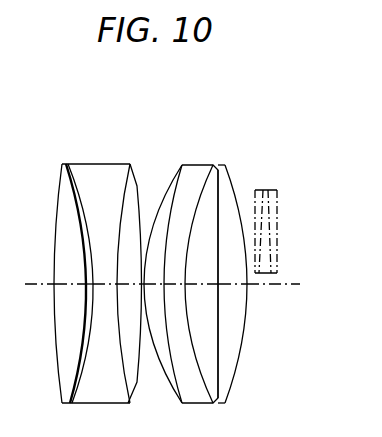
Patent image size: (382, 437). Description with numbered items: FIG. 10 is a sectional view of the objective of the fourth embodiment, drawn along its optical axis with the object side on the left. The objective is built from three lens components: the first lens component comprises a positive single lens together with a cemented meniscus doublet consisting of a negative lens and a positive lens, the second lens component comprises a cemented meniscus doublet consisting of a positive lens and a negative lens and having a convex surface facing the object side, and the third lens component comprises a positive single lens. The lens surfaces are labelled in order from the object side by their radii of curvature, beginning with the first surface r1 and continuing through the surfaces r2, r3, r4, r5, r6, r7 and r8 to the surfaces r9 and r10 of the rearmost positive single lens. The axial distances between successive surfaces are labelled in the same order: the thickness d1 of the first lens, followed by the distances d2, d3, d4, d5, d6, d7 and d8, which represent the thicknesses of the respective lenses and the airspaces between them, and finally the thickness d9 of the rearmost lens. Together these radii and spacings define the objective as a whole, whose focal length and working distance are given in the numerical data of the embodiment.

The radius of curvature of first lens surface r1 is at (55, 200).
The radius of curvature of second lens surface r2 is at (67, 162).
The radius of curvature of third lens surface r3 is at (84, 192).
The radius of curvature of fourth lens surface r4 is at (124, 186).
The radius of curvature of fifth lens surface r5 is at (136, 186).
The radius of curvature of sixth lens surface r6 is at (172, 180).
The radius of curvature of seventh lens surface r7 is at (184, 192).
The radius of curvature of eighth lens surface r8 is at (203, 188).
The radius of curvature of ninth lens surface r9 is at (218, 185).
The radius of curvature of tenth lens surface r10 is at (230, 183).
The thickness of first lens d1 is at (68, 286).
The airspace or lens thickness d2 is at (93, 275).
The airspace or lens thickness d3 is at (99, 303).
The airspace or lens thickness d4 is at (118, 260).
The airspace or lens thickness d5 is at (141, 317).
The airspace or lens thickness d6 is at (151, 286).
The airspace or lens thickness d7 is at (186, 330).
The airspace or lens thickness d8 is at (203, 288).
The thickness of rearmost lens d9 is at (232, 289).